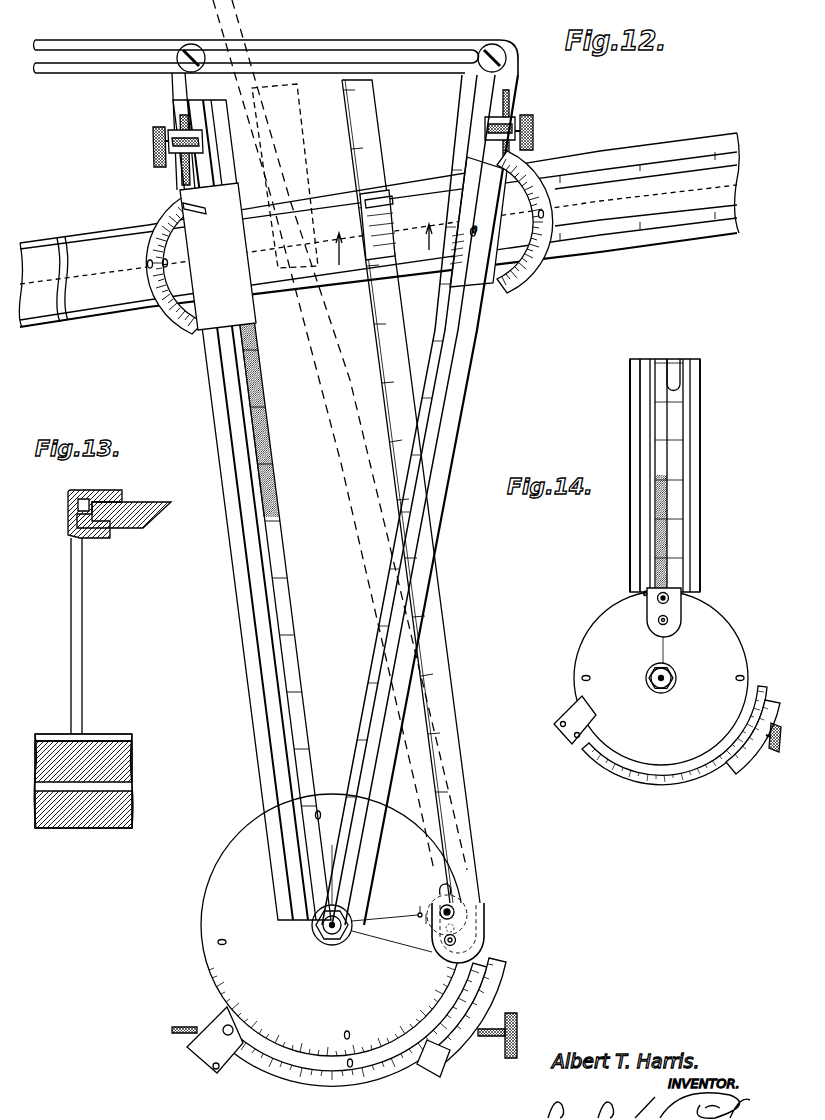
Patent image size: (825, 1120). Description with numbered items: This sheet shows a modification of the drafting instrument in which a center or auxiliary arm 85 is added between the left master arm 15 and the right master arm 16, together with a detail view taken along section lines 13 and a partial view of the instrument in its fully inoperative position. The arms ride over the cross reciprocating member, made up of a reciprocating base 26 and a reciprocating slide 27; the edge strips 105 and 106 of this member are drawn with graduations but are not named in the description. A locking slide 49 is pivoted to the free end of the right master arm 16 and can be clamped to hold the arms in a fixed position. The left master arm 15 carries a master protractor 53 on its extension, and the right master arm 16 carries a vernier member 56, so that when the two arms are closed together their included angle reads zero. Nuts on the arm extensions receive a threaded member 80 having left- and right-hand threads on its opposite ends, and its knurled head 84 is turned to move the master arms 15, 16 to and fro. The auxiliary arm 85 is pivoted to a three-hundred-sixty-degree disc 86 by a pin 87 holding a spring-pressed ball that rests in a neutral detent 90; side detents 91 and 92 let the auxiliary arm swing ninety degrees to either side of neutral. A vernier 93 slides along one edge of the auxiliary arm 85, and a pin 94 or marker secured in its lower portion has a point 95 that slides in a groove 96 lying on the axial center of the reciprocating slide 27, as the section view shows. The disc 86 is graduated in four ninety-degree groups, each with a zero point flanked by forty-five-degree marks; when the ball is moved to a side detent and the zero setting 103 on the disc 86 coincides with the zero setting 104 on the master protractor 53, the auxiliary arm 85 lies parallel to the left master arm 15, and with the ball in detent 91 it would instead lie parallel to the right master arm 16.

In FIG. 12, the section line 13 is at (387, 250).
In FIG. 12, the left master arm 15 is at (213, 412).
In FIG. 14, the left master arm 15 is at (630, 410).
In FIG. 12, the right master arm 16 is at (470, 398).
In FIG. 14, the right master arm 16 is at (703, 376).
In FIG. 12, the reciprocating base 26 is at (379, 229).
In FIG. 13, the reciprocating base 26 is at (101, 822).
In FIG. 12, the reciprocating slide 27 is at (138, 322).
In FIG. 13, the reciprocating slide 27 is at (105, 760).
In FIG. 12, the locking slide 49 is at (106, 42).
In FIG. 12, the master protractor 53 is at (268, 1083).
In FIG. 14, the master protractor 53 is at (624, 780).
In FIG. 12, the vernier member 56 is at (495, 990).
In FIG. 14, the vernier member 56 is at (740, 765).
In FIG. 12, the threaded member 80 is at (490, 1037).
In FIG. 12, the knurled head 84 is at (518, 1030).
In FIG. 14, the knurled head 84 is at (780, 723).
In FIG. 12, the center or auxiliary arm 85 is at (348, 489).
In FIG. 13, the center or auxiliary arm 85 is at (150, 502).
In FIG. 14, the center or auxiliary arm 85 is at (684, 424).
In FIG. 12, the 360 degree disc 86 is at (205, 886).
In FIG. 14, the 360 degree disc 86 is at (740, 637).
In FIG. 12, the pin 87 is at (455, 912).
In FIG. 14, the pin 87 is at (668, 598).
In FIG. 12, the detent 90 is at (421, 918).
In FIG. 14, the detent 90 is at (661, 626).
In FIG. 12, the detent 91 is at (441, 887).
In FIG. 14, the detent 91 is at (645, 599).
In FIG. 14, the detent 92 is at (673, 598).
In FIG. 12, the vernier 93 is at (366, 196).
In FIG. 13, the vernier 93 is at (115, 490).
In FIG. 13, the pin 94 is at (84, 595).
In FIG. 13, the point 95 is at (80, 735).
In FIG. 12, the groove 96 is at (130, 274).
In FIG. 13, the groove 96 is at (52, 734).
In FIG. 12, the zero setting 103 is at (348, 1031).
In FIG. 12, the zero setting 104 is at (348, 1059).
In FIG. 12, the upper scale strip 105 is at (610, 148).
In FIG. 12, the lower scale strip 106 is at (686, 252).